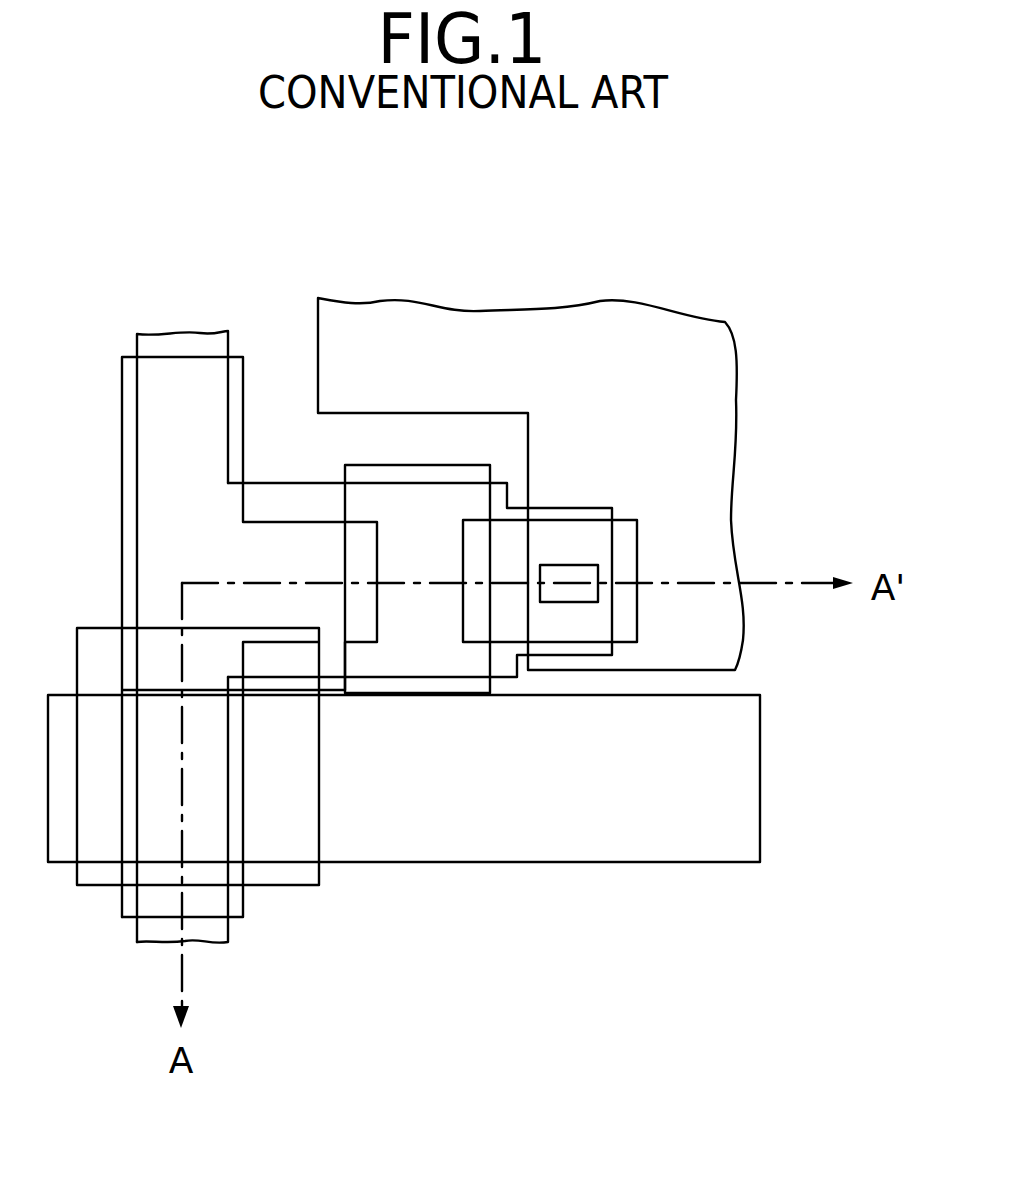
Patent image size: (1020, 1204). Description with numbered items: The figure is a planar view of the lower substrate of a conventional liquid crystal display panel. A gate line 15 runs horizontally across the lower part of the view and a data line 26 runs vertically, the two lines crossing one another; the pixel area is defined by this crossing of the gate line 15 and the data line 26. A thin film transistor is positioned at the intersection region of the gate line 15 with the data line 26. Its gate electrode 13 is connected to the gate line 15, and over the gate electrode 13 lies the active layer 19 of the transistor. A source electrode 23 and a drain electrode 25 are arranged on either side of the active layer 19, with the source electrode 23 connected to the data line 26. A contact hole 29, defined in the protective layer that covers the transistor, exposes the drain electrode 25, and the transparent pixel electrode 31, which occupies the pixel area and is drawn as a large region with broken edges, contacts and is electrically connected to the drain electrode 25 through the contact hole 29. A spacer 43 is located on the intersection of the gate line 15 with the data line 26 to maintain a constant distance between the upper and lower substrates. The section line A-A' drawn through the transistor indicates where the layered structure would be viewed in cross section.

The gate electrode 13 is at (419, 477).
The gate line 15 is at (753, 782).
The active layer 19 is at (467, 505).
The source electrode 23 is at (283, 548).
The drain electrode 25 is at (583, 547).
The data line 26 is at (180, 383).
The contact hole 29 is at (587, 577).
The pixel electrode 31 is at (700, 378).
The spacer 43 is at (263, 845).